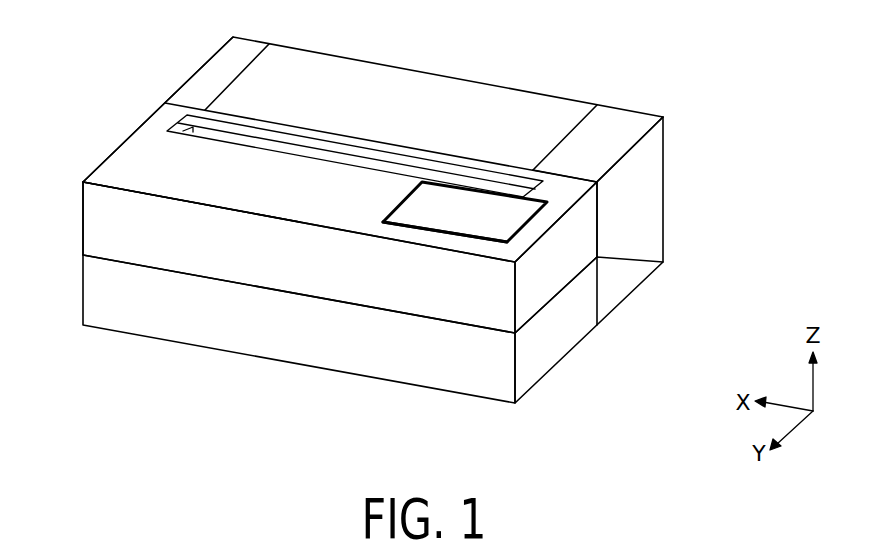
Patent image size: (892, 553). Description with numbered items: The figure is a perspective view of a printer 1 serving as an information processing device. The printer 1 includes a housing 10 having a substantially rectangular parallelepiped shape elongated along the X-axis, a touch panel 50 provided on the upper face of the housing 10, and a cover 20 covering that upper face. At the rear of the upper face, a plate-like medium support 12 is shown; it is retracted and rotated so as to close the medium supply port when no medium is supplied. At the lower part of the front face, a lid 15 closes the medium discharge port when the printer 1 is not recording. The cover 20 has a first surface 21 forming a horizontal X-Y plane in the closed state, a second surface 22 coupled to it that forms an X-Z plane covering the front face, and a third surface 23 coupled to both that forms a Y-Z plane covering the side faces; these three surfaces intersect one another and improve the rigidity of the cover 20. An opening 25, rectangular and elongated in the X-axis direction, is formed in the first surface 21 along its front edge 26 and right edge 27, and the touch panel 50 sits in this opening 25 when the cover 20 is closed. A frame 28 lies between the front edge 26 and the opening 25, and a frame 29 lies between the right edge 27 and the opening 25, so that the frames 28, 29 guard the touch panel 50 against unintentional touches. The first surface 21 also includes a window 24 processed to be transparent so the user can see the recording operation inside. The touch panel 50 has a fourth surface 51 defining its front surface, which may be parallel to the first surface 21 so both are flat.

The printer 1 is at (376, 226).
The housing 10 is at (373, 272).
The medium support 12 is at (350, 76).
The lid 15 is at (270, 345).
The cover 20 is at (376, 243).
The first surface 21 is at (107, 170).
The second surface 22 is at (440, 300).
The third surface 23 is at (543, 297).
The window 24 is at (355, 132).
The opening 25 is at (398, 177).
The front edge 26 is at (178, 190).
The right edge 27 is at (600, 186).
The frame 28 is at (437, 238).
The frame 29 is at (535, 230).
The touch panel 50 is at (419, 192).
The fourth surface 51 is at (472, 205).